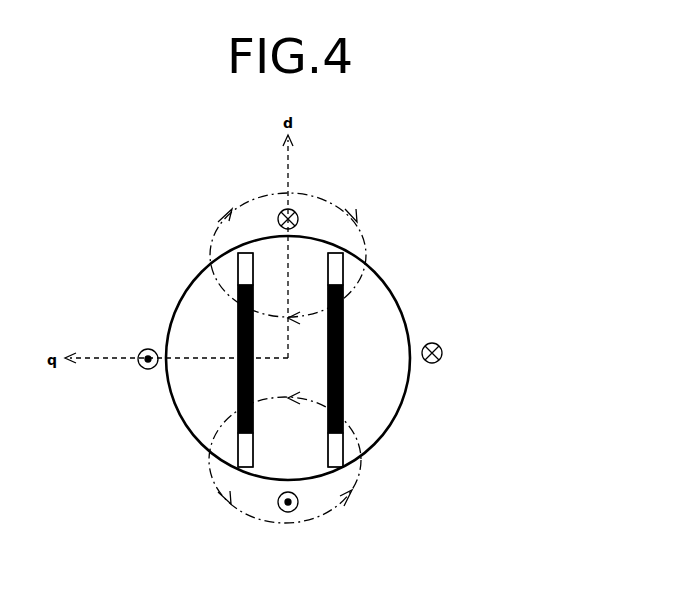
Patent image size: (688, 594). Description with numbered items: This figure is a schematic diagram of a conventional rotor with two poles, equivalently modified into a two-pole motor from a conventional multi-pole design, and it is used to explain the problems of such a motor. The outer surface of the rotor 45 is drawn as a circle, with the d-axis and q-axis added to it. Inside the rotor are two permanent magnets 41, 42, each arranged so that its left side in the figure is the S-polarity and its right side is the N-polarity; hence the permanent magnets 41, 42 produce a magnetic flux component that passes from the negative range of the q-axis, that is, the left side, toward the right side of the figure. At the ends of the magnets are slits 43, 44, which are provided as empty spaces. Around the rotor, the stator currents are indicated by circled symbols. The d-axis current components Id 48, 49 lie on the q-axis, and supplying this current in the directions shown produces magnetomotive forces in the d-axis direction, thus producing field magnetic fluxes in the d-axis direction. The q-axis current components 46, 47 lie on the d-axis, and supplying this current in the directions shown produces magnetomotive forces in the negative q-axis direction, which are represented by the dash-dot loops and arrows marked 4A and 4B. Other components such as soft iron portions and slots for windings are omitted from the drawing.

The permanent magnet 41 is at (343, 305).
The permanent magnet 42 is at (238, 308).
The slit 43 is at (343, 252).
The slit 44 is at (343, 468).
The outer surface of rotor 45 is at (402, 408).
The q-axis current component 46 is at (296, 212).
The q-axis current component 47 is at (298, 508).
The d-axis current component Id 48 is at (440, 346).
The d-axis current component Id 49 is at (141, 352).
The magnetomotive force direction 4A is at (213, 250).
The magnetomotive force direction 4B is at (210, 470).